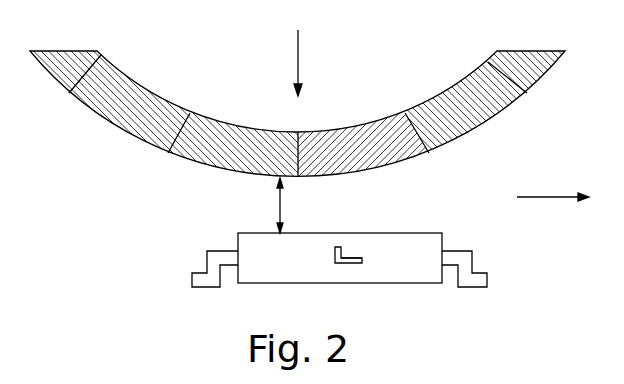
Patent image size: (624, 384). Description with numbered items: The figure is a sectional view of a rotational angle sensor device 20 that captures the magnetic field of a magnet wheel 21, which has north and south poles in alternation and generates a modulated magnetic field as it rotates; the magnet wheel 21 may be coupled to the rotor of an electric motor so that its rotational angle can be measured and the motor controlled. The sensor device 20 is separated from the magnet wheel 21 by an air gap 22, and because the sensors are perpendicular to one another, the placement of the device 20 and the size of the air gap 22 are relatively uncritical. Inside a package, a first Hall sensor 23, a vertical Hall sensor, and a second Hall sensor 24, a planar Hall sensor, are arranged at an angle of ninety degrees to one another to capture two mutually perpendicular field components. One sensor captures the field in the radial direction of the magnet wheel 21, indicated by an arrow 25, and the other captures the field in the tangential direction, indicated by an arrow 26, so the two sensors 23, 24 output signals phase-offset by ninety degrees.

The rotational angle sensor device 20 is at (393, 285).
The magnet wheel 21 is at (164, 115).
The air gap 22 is at (283, 204).
The first Hall sensor 23 is at (312, 253).
The second Hall sensor 24 is at (380, 258).
The arrow indicating radial direction 25 is at (302, 60).
The arrow indicating tangential direction 26 is at (548, 197).